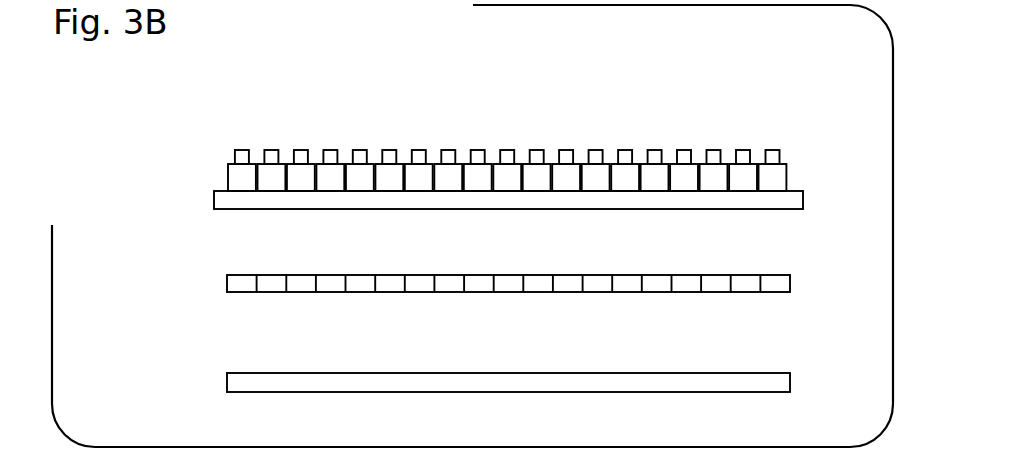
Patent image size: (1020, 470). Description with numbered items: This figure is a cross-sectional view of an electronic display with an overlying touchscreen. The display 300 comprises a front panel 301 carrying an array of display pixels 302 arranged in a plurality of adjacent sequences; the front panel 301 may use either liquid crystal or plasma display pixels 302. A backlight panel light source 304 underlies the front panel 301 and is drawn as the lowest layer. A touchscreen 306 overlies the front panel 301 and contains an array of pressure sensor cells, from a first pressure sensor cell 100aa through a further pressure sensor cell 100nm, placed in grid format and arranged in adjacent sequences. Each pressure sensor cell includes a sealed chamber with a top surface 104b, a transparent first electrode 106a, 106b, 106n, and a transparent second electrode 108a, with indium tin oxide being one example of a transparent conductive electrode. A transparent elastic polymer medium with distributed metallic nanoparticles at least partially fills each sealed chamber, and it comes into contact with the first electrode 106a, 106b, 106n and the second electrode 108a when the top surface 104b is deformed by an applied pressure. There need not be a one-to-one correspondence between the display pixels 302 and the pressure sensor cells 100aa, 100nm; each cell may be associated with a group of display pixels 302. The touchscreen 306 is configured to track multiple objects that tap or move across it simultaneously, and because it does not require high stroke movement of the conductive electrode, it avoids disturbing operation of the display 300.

The display 300 is at (693, 99).
The touchscreen 306 is at (475, 181).
The pressure sensor cell 100aa is at (247, 184).
The pressure sensor cell 100nm is at (787, 178).
The top surface 104b is at (281, 164).
The transparent first electrode 106a is at (243, 150).
The transparent first electrode 106b is at (273, 150).
The transparent first electrode 106n is at (773, 150).
The transparent second electrode 108a is at (803, 198).
The front panel 301 is at (479, 286).
The display pixels 302 is at (784, 283).
The backlight panel light source 304 is at (227, 382).